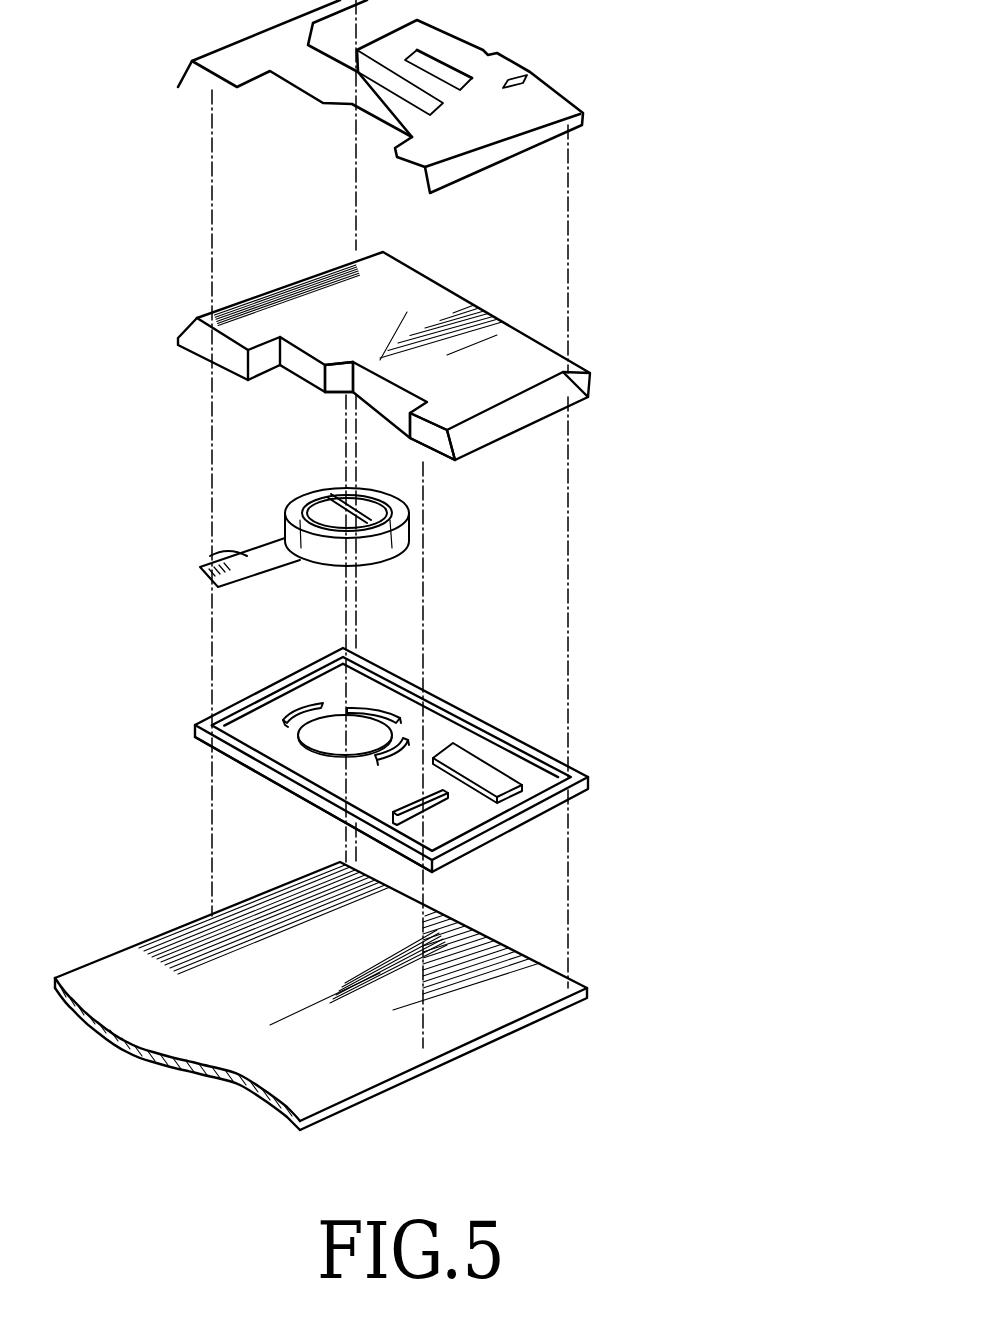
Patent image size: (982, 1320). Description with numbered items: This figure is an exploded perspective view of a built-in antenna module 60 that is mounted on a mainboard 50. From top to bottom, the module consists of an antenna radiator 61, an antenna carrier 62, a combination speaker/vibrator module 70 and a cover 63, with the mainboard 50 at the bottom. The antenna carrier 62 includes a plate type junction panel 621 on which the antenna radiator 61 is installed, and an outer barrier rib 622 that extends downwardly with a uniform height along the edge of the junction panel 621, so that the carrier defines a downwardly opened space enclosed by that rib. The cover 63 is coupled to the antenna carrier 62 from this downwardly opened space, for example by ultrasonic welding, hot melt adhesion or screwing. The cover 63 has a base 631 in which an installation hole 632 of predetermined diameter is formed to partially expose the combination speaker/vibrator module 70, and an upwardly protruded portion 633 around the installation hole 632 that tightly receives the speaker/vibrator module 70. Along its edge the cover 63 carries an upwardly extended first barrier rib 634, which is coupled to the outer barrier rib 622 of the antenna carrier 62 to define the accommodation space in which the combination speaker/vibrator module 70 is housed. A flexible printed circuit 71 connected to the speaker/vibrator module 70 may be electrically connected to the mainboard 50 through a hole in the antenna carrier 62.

The mainboard 50 is at (598, 992).
The built-in antenna module 60 is at (678, 380).
The antenna radiator 61 is at (532, 73).
The antenna carrier 62 is at (384, 363).
The junction panel 621 is at (470, 393).
The outer barrier rib 622 is at (317, 372).
The cover 63 is at (402, 752).
The base 631 is at (548, 785).
The installation hole 632 is at (323, 742).
The upwardly protruded portion 633 is at (380, 702).
The first barrier rib 634 is at (257, 762).
The combination speaker/vibrator module 70 is at (261, 536).
The flexible printed circuit 71 is at (247, 558).